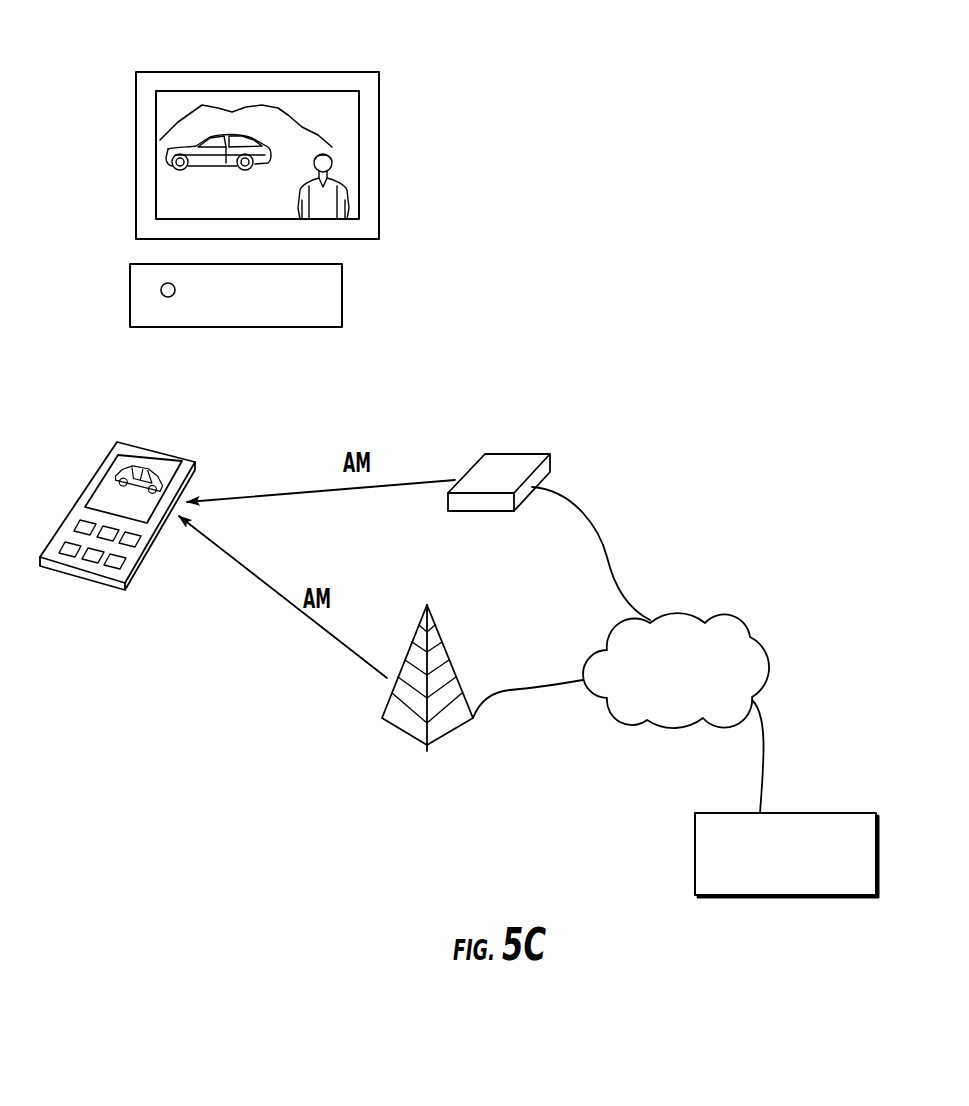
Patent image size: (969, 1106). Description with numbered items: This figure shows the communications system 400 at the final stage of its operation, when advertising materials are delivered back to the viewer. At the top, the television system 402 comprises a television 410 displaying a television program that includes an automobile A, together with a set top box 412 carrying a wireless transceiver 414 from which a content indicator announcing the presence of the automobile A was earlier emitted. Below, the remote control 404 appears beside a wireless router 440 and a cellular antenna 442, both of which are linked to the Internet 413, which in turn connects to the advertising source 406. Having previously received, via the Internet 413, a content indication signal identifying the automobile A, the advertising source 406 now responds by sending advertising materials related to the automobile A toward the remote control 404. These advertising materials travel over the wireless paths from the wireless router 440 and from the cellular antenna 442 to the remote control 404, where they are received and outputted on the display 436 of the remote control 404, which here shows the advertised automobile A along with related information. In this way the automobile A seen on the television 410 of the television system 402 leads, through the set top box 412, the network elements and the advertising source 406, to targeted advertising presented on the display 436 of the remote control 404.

The communications system 400 is at (489, 226).
The television system 402 is at (108, 325).
The remote control 404 is at (60, 533).
The advertising source 406 is at (828, 812).
The television 410 is at (380, 153).
The set top box 412 is at (293, 315).
The Internet 413 is at (750, 635).
The wireless transceiver 414 is at (175, 284).
The display 436 is at (182, 462).
The wireless router 440 is at (551, 455).
The cellular antenna 442 is at (383, 717).
The automobile A is at (227, 162).